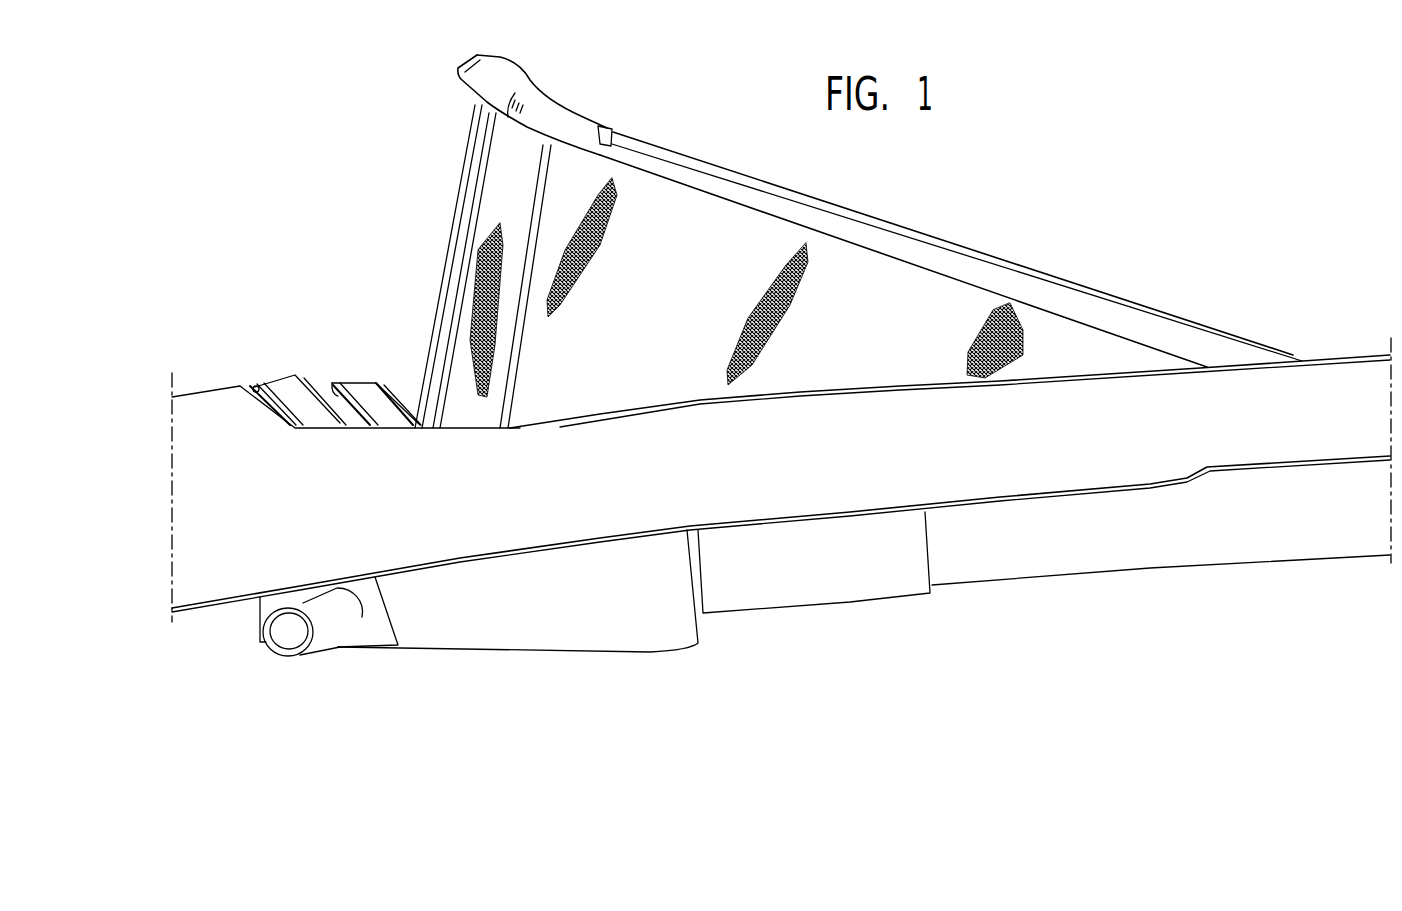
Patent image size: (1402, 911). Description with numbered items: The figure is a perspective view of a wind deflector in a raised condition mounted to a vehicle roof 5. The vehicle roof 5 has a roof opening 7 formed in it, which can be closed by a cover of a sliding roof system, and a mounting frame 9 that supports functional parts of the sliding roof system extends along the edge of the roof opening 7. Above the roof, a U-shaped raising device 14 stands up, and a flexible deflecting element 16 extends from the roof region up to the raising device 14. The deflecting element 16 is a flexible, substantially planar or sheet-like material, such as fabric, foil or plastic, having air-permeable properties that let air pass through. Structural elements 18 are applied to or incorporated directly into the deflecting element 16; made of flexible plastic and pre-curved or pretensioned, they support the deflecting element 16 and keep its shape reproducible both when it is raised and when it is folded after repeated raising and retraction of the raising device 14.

The vehicle roof 5 is at (210, 408).
The roof opening 7 is at (260, 387).
The mounting frame 9 is at (362, 392).
The raising device 14 is at (466, 69).
The deflecting element 16 is at (715, 218).
The structural elements 18 is at (483, 173).